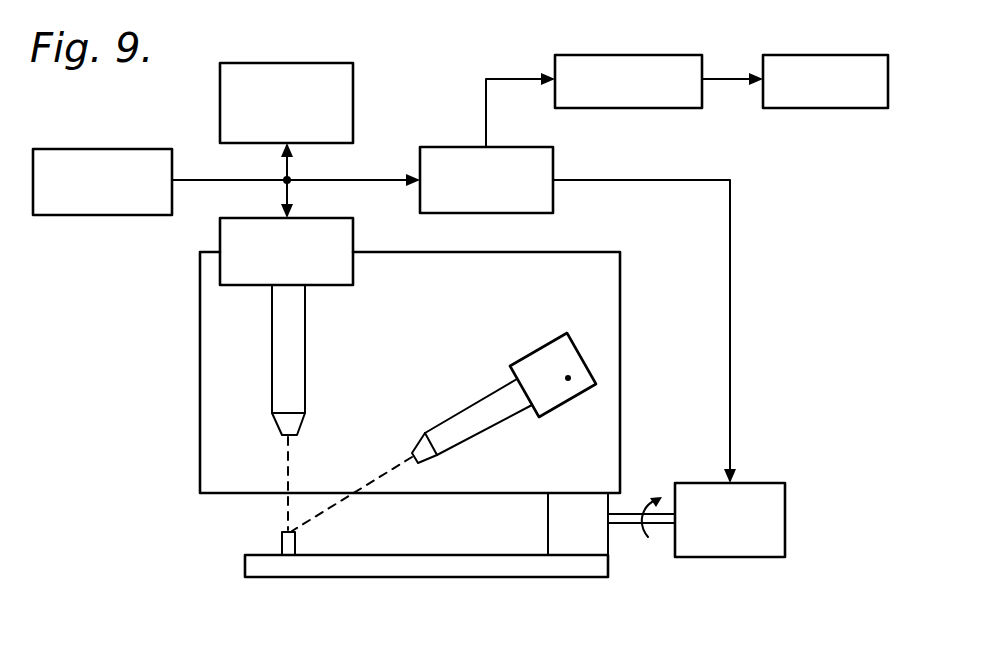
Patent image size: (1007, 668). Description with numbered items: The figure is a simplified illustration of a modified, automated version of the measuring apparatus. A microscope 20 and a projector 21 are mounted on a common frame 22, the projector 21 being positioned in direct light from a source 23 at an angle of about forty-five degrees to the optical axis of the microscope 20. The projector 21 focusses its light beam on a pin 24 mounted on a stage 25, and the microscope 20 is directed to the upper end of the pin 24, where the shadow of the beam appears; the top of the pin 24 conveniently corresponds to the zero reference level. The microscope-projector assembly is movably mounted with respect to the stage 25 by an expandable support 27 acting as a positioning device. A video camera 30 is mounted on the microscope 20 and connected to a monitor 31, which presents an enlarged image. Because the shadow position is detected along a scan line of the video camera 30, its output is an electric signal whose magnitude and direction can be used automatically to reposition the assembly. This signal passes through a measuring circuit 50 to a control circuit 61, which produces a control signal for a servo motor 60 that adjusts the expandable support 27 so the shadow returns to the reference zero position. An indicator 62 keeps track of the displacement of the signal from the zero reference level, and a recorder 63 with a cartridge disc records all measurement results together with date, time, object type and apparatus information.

The microscope 20 is at (305, 347).
The projector 21 is at (462, 412).
The common frame 22 is at (210, 386).
The light source 23 is at (546, 346).
The pin 24 is at (282, 542).
The stage 25 is at (470, 565).
The expandable support 27 is at (603, 540).
The video camera 30 is at (338, 218).
The monitor 31 is at (328, 63).
The measuring circuit 50 is at (98, 149).
The servo motor 60 is at (785, 512).
The control circuit 61 is at (553, 203).
The indicator 62 is at (628, 55).
The recorder 63 is at (830, 55).